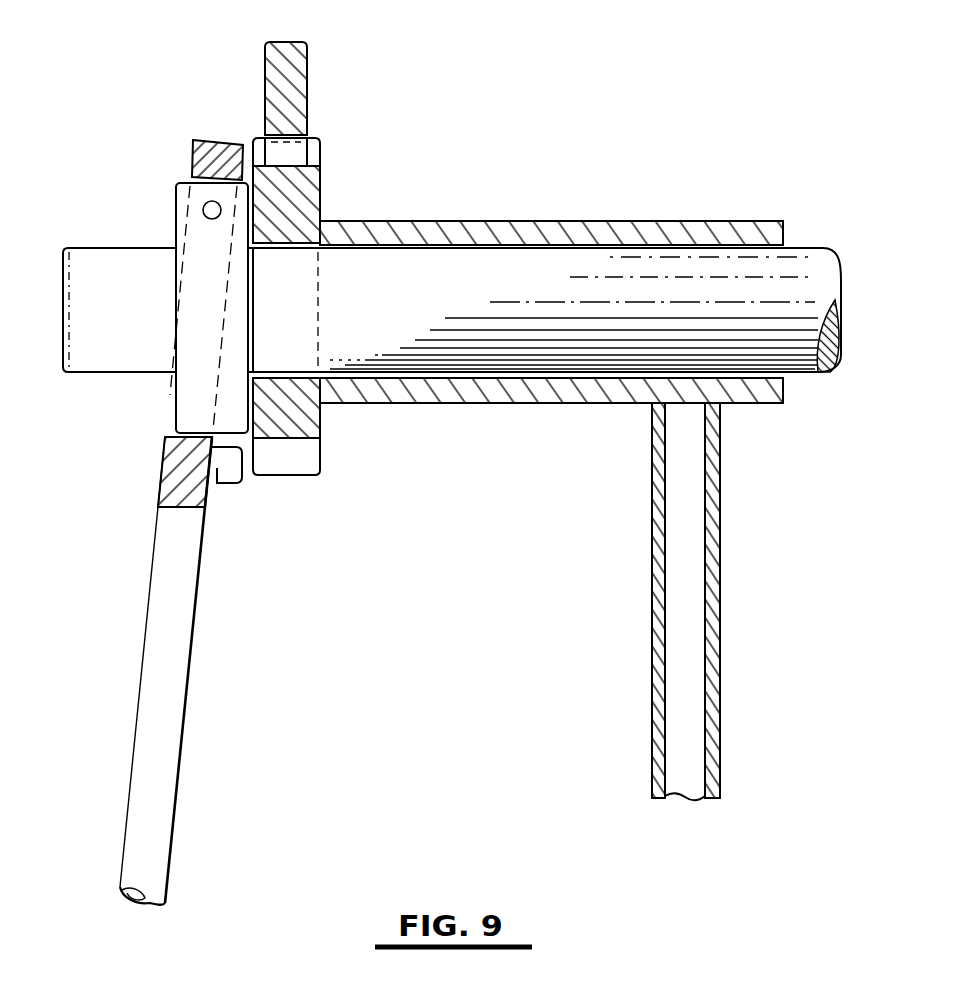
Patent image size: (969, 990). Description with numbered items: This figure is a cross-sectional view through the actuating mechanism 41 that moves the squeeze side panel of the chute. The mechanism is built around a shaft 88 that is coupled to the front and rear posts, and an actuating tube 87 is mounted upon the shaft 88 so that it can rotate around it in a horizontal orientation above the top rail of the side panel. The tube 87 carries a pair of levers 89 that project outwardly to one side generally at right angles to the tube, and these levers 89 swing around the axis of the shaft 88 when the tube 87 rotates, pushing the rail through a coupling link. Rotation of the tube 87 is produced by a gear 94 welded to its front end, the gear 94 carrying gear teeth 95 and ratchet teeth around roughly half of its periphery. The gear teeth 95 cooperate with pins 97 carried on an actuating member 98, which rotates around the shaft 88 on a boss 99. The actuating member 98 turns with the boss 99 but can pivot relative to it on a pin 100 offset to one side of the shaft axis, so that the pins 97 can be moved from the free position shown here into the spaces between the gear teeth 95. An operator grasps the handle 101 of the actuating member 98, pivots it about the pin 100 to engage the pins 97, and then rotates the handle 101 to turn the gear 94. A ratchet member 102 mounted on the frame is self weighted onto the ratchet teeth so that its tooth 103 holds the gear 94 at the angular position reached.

The actuating mechanism 41 is at (518, 262).
The actuating tube 87 is at (643, 220).
The shaft 88 is at (460, 270).
The levers 89 is at (653, 631).
The gear 94 is at (325, 177).
The gear teeth 95 is at (310, 470).
The pins 97 is at (230, 468).
The actuating member 98 is at (172, 479).
The boss 99 is at (174, 229).
The pin 100 is at (203, 209).
The handle 101 is at (172, 759).
The ratchet member 102 is at (310, 43).
The tooth 103 is at (309, 144).